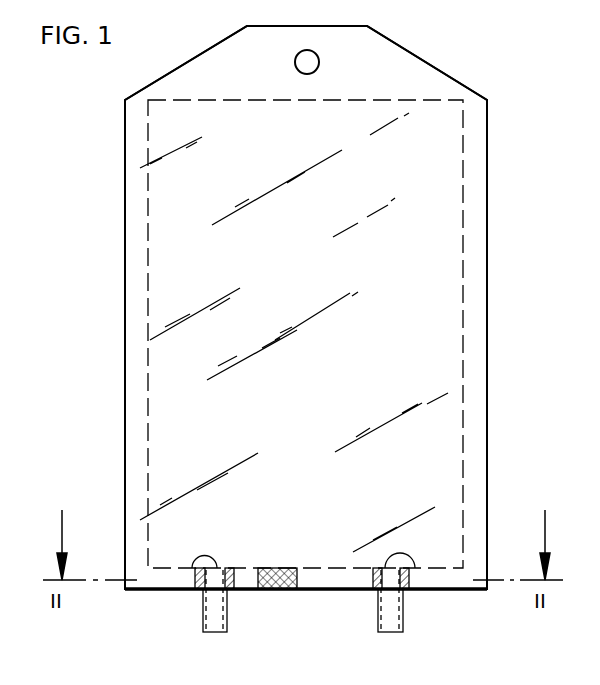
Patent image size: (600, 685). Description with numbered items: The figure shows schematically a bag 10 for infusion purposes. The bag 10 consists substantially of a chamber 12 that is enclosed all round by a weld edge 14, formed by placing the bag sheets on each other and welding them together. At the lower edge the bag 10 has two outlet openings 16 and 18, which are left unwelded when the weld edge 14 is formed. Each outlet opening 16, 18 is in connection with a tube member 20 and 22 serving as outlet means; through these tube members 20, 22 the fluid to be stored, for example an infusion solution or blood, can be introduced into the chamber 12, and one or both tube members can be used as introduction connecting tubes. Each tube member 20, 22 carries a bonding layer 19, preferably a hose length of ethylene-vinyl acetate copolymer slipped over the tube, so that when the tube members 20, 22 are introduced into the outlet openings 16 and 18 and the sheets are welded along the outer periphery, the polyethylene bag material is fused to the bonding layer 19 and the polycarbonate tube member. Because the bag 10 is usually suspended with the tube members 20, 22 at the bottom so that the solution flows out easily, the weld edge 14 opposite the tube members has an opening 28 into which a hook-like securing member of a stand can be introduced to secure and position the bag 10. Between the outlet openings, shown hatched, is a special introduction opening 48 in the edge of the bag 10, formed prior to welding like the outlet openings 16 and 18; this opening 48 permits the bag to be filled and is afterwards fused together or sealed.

The bag 10 is at (492, 173).
The chamber 12 is at (448, 265).
The weld edge 14 is at (433, 77).
The outlet opening 16 is at (192, 568).
The outlet opening 18 is at (415, 568).
The bonding layer 19 is at (232, 592).
The tube member 20 is at (207, 622).
The tube member 22 is at (397, 622).
The opening 28 is at (318, 61).
The introduction opening 48 is at (283, 592).